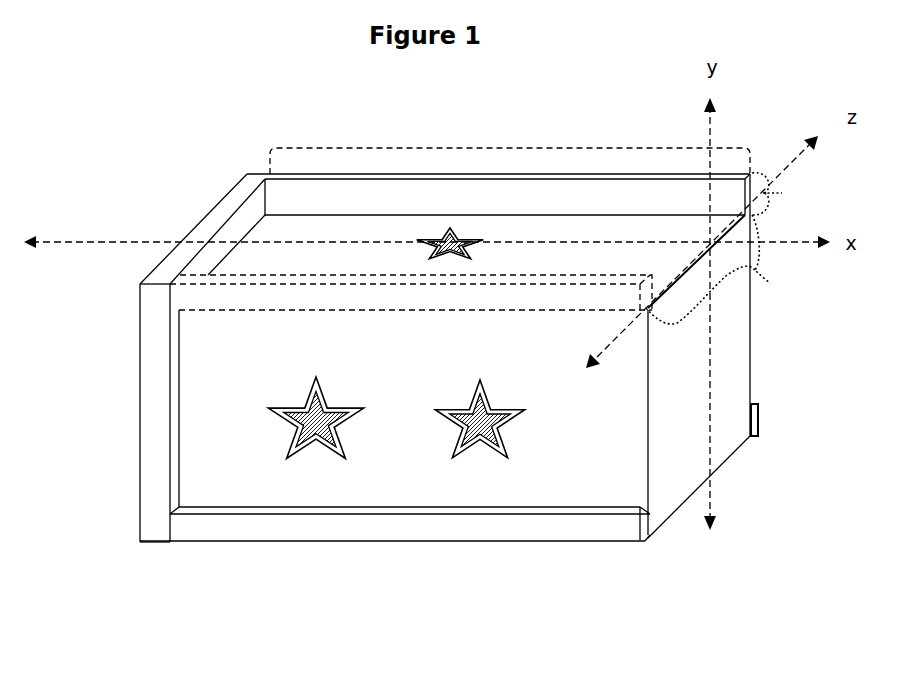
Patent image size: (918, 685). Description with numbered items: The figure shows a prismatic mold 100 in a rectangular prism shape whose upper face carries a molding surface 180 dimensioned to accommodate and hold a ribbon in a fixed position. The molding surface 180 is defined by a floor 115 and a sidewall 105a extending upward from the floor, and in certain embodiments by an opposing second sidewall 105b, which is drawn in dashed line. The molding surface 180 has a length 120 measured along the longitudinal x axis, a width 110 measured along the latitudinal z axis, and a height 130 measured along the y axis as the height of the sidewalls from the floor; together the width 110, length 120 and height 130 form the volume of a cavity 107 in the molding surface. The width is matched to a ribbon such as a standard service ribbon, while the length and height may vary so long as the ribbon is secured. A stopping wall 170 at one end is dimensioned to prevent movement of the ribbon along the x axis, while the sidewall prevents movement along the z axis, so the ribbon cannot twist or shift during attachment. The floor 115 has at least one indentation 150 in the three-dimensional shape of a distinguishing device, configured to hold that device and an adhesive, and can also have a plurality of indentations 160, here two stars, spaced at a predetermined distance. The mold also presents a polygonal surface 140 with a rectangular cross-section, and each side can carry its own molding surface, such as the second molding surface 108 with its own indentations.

The prismatic mold 100 is at (199, 134).
The sidewall 105a is at (437, 193).
The second sidewall 105b is at (233, 288).
The cavity 107 is at (593, 220).
The second molding surface 108 is at (607, 472).
The width 110 is at (740, 269).
The floor 115 is at (327, 230).
The length 120 is at (545, 148).
The height 130 is at (797, 194).
The polygonal surface 140 is at (728, 390).
The indentation 150 is at (458, 260).
The plurality of indentations 160 is at (323, 442).
The stopping wall 170 is at (155, 527).
The molding surface 180 is at (262, 227).